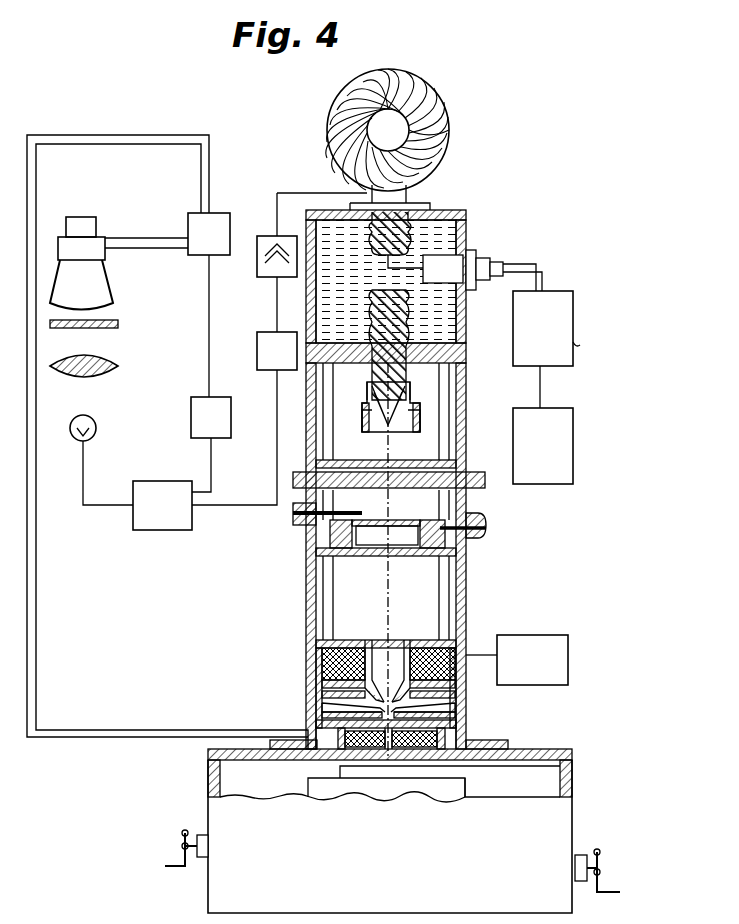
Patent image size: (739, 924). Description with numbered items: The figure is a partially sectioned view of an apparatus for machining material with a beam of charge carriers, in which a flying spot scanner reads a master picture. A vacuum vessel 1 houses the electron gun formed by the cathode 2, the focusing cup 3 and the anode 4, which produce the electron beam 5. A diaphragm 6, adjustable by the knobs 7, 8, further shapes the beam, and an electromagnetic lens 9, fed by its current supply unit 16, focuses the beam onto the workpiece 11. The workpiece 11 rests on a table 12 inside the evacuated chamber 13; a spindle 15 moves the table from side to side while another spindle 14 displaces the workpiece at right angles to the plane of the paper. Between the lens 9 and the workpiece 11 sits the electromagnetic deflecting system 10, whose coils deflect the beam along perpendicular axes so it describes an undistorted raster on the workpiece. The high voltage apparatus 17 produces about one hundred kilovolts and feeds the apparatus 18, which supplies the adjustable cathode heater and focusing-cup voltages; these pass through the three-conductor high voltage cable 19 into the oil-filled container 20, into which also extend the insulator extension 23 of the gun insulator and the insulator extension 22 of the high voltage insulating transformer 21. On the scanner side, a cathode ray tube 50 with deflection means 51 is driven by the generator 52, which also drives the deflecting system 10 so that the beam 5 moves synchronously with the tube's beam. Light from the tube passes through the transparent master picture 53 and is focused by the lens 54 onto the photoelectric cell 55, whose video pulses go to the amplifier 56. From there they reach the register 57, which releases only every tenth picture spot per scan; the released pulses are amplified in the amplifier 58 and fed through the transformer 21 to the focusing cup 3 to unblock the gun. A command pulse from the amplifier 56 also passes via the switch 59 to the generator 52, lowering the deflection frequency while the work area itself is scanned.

The vacuum vessel 1 is at (466, 499).
The cathode 2 is at (400, 396).
The focusing cup 3 is at (432, 408).
The anode 4 is at (400, 462).
The electron beam 5 is at (395, 522).
The diaphragm 6 is at (362, 518).
The knob 7 is at (492, 524).
The knob 8 is at (298, 526).
The electromagnetic lens 9 is at (424, 620).
The electromagnetic deflecting system 10 is at (440, 735).
The workpiece 11 is at (440, 769).
The table 12 is at (455, 792).
The chamber 13 is at (572, 753).
The spindle 14 is at (600, 866).
The spindle 15 is at (182, 840).
The current supply unit 16 is at (530, 635).
The high voltage apparatus 17 is at (558, 433).
The heater and cup voltage apparatus 18 is at (558, 306).
The three-conductor high voltage cable 19 is at (494, 258).
The oil-filled container 20 is at (466, 237).
The high voltage insulating transformer 21 is at (438, 135).
The insulator extension of the high voltage isolating transformer 22 is at (405, 235).
The insulator extension 23 is at (408, 336).
The cathode ray tube 50 is at (88, 279).
The deflection means 51 is at (90, 248).
The generator 52 is at (200, 224).
The transparent master picture 53 is at (118, 324).
The lens 54 is at (118, 366).
The photoelectric cell 55 is at (96, 428).
The amplifier 56 is at (168, 520).
The register 57 is at (257, 340).
The amplifier 58 is at (257, 268).
The switch 59 is at (194, 418).